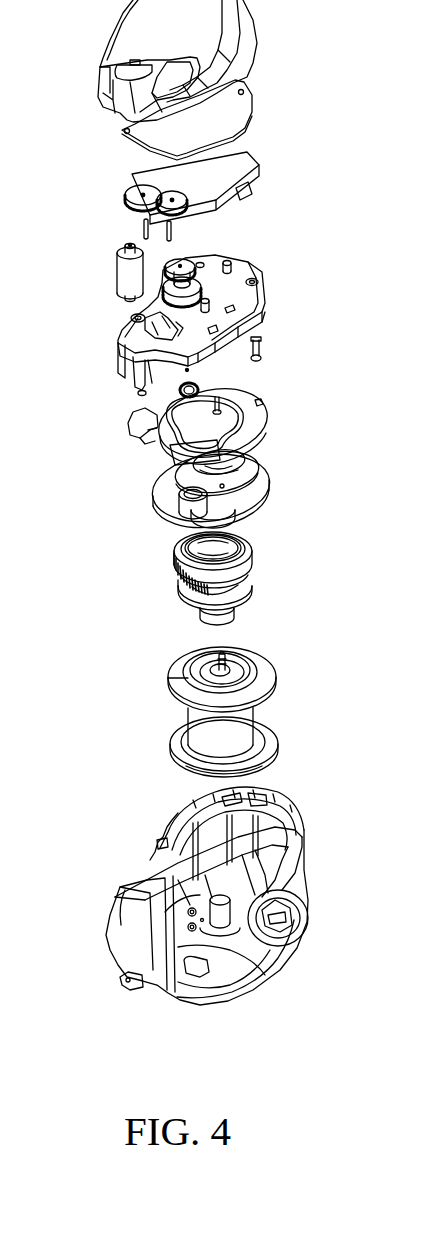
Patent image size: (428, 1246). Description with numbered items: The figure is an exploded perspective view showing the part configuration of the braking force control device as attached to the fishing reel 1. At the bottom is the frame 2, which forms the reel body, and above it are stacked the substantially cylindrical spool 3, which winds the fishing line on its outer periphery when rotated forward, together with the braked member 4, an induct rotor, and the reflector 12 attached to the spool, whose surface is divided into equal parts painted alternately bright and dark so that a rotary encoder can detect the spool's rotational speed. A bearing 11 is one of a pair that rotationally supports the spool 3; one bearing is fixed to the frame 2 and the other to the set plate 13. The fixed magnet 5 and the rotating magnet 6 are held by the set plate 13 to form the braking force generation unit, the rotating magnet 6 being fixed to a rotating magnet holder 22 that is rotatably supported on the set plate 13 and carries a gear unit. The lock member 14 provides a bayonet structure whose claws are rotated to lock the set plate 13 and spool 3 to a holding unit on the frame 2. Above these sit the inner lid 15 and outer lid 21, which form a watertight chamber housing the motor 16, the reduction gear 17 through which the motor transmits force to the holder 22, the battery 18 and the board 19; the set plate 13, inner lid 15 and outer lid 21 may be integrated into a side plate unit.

The fishing reel 1 is at (337, 384).
The frame 2 is at (133, 910).
The spool 3 is at (182, 743).
The braked member 4 is at (180, 688).
The fixed magnet 5 is at (190, 525).
The rotating magnet 6 is at (180, 590).
The bearing 11 is at (245, 617).
The reflector 12 is at (182, 665).
The set plate 13 is at (150, 482).
The lock member 14 is at (133, 420).
The inner lid 15 is at (238, 275).
The motor 16 is at (124, 277).
The reduction gear 17 is at (166, 209).
The battery 18 is at (227, 163).
The board 19 is at (148, 127).
The outer lid 21 is at (143, 15).
The rotating magnet holder 22 is at (258, 552).